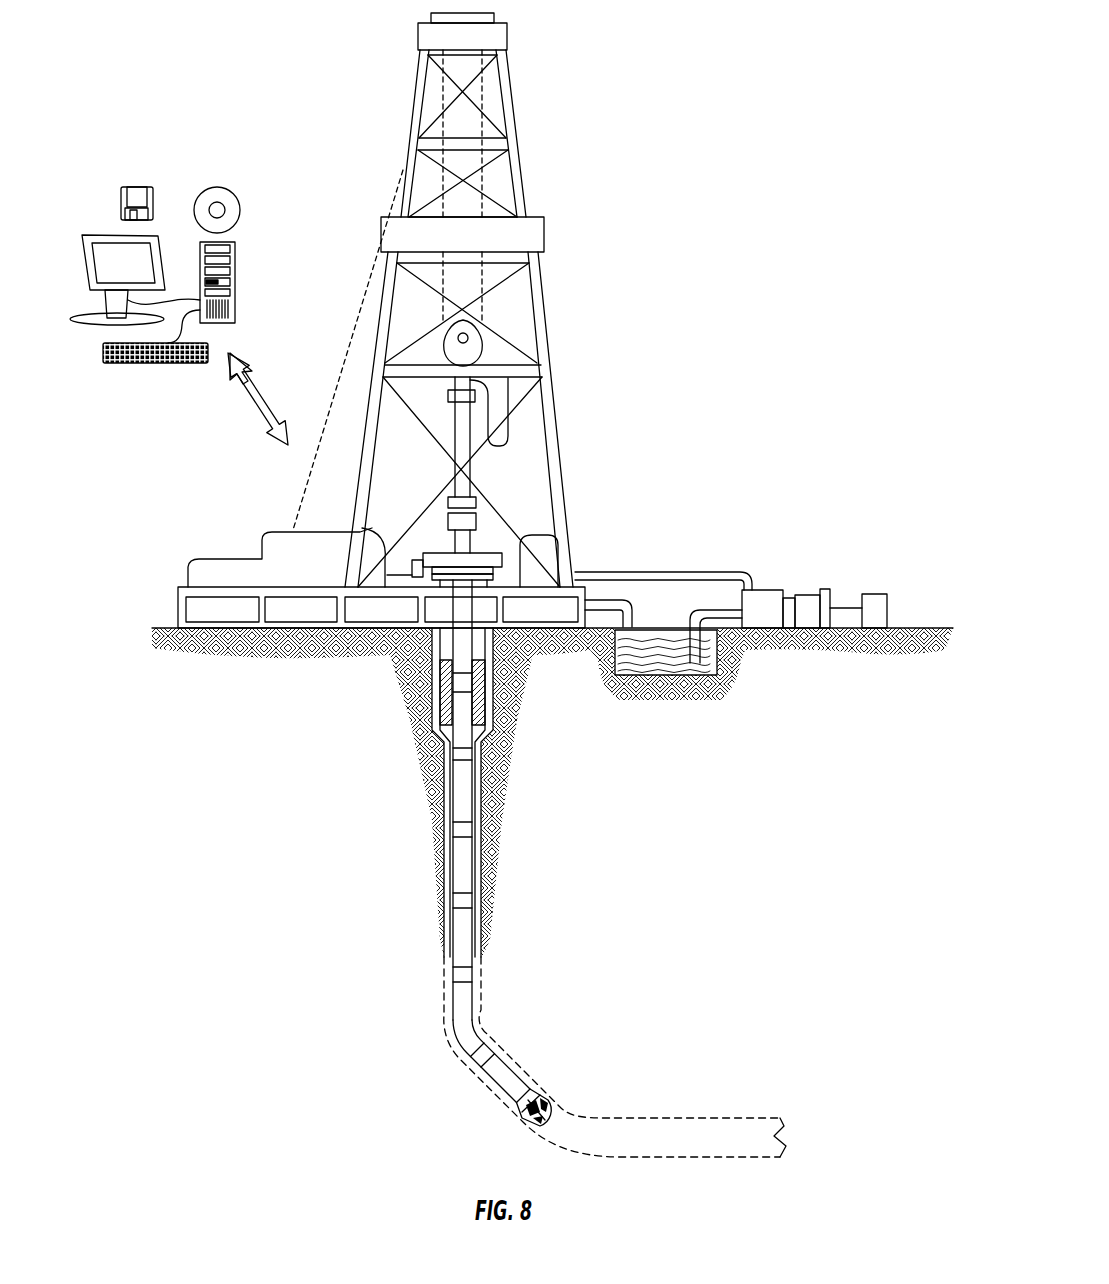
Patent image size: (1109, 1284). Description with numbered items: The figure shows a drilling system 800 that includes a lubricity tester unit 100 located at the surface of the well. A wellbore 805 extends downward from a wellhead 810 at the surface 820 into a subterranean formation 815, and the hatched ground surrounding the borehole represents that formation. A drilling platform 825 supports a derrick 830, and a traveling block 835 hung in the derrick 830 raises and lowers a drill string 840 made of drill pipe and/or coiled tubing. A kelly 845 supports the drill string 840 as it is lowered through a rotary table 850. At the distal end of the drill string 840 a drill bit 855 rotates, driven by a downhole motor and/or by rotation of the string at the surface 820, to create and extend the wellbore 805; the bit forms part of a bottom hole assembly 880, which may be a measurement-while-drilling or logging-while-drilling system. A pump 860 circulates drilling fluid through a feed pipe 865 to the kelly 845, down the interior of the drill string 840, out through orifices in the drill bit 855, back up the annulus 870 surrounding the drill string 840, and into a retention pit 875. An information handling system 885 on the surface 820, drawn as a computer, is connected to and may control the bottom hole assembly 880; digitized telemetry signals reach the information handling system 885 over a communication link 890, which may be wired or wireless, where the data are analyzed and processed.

The drilling system 800 is at (765, 116).
The wellbore 805 is at (482, 825).
The wellhead 810 is at (504, 577).
The subterranean formation 815 is at (700, 912).
The surface 820 is at (920, 628).
The drilling platform 825 is at (178, 608).
The derrick 830 is at (522, 160).
The traveling block 835 is at (483, 340).
The drill string 840 is at (473, 808).
The kelly 845 is at (463, 420).
The rotary table 850 is at (480, 552).
The drill bit 855 is at (557, 1103).
The pump 860 is at (768, 590).
The feed pipe 865 is at (690, 572).
The annulus 870 is at (443, 825).
The retention pit 875 is at (660, 663).
The bottom hole assembly 880 is at (471, 1072).
The information handling system 885 is at (133, 161).
The communication link 890 is at (248, 403).
The lubricity tester unit 100 is at (873, 587).